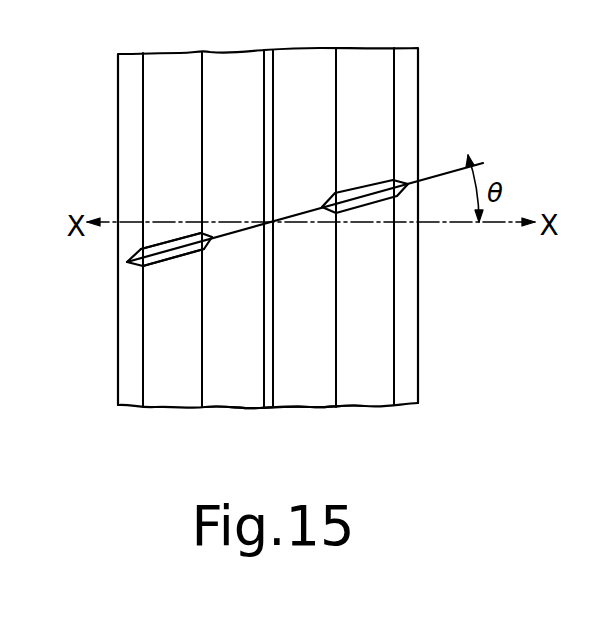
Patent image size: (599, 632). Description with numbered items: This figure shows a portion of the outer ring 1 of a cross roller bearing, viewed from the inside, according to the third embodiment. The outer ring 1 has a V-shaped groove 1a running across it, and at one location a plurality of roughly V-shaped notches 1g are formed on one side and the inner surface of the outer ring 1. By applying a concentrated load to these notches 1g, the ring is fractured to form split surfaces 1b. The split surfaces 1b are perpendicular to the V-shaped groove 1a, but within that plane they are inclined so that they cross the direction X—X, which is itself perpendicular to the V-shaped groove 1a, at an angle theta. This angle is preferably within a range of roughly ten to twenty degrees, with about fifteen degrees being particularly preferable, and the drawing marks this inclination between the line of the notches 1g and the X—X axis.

The outer ring 1 is at (427, 82).
The V-shaped groove 1a is at (243, 380).
The split surfaces 1b is at (141, 249).
The V-shaped notches 1g is at (375, 183).